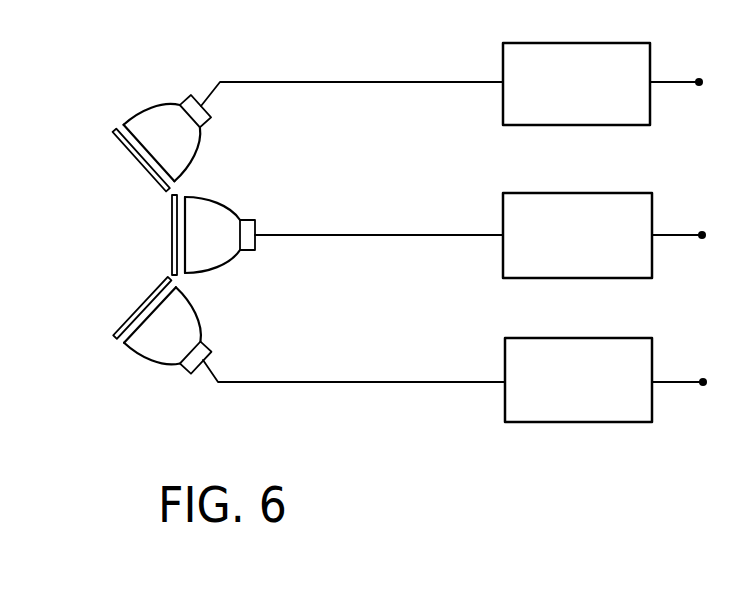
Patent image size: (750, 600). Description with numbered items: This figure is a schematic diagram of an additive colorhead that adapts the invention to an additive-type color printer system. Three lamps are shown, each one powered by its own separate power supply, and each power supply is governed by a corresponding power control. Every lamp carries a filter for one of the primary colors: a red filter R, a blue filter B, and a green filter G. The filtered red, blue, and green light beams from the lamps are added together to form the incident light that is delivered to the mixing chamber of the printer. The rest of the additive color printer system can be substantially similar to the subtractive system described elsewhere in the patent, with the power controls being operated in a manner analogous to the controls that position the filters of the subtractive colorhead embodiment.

The red filter R is at (127, 156).
The blue filter B is at (170, 213).
The green filter G is at (133, 320).